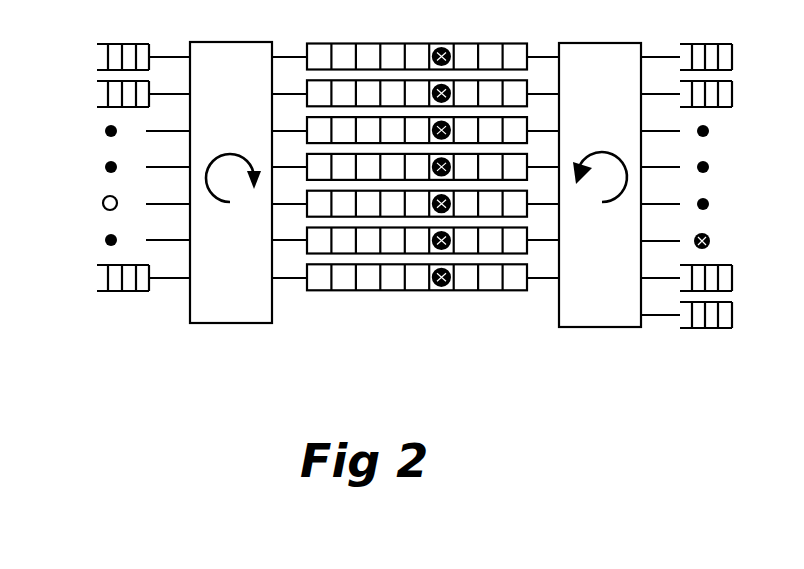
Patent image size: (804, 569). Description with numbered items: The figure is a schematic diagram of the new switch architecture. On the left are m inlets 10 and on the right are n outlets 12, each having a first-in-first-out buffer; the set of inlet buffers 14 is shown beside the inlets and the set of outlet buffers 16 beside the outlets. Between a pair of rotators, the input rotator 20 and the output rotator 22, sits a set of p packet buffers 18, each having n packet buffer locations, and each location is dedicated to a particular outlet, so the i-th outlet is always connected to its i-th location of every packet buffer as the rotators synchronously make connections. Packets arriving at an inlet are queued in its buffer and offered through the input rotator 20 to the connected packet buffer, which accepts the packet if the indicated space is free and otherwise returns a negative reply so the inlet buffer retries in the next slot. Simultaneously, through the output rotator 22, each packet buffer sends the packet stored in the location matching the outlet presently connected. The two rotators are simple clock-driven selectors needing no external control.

The inlets 10 is at (47, 305).
The outlets 12 is at (770, 333).
The inlet buffers 14 is at (97, 305).
The outlet buffers 16 is at (732, 333).
The packet buffers 18 is at (312, 323).
The input rotator 20 is at (210, 305).
The output rotator 22 is at (585, 303).